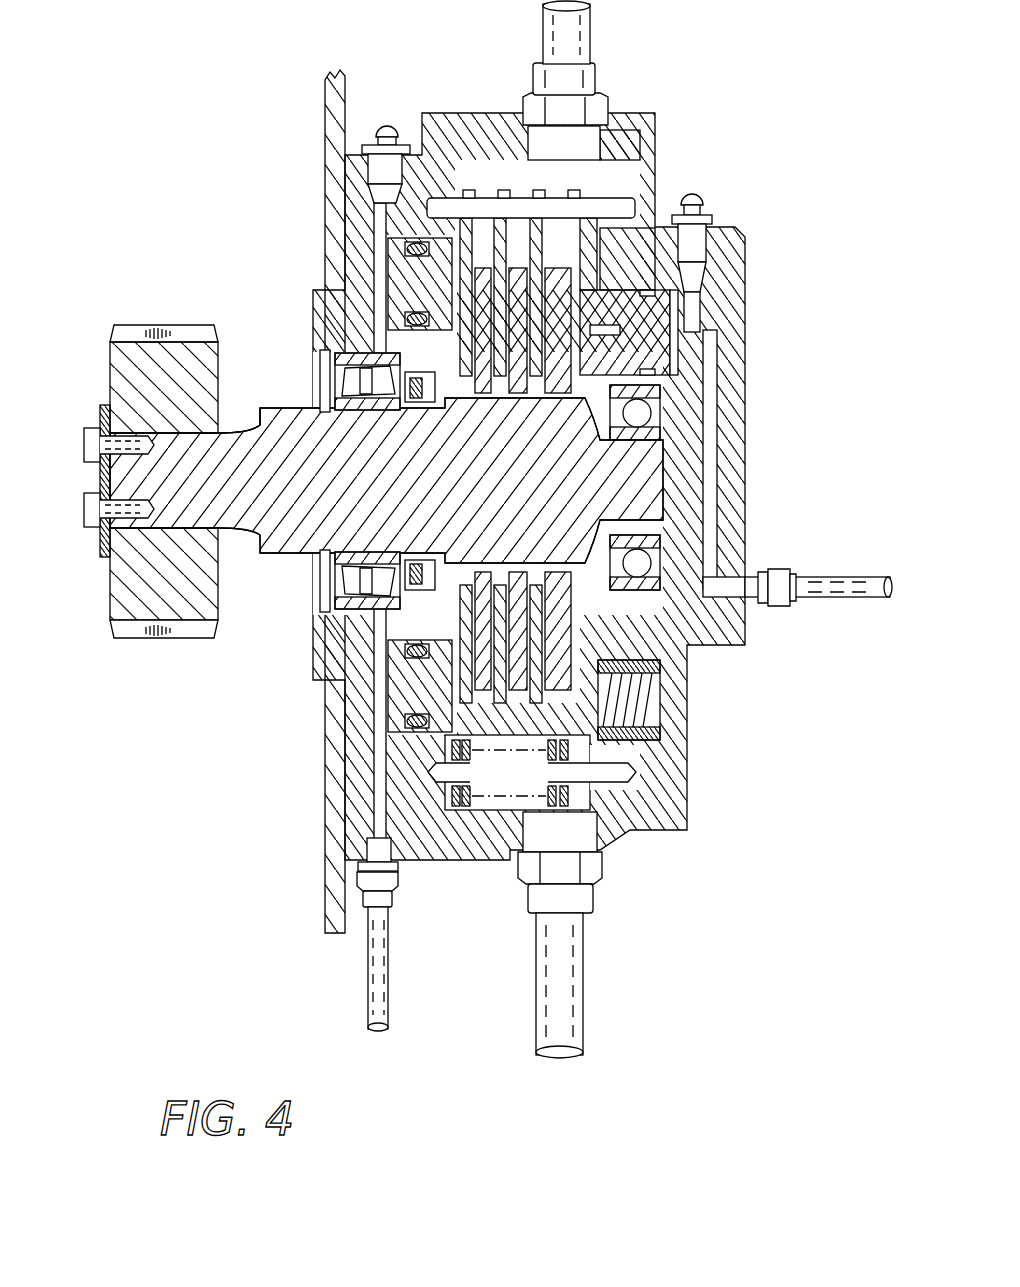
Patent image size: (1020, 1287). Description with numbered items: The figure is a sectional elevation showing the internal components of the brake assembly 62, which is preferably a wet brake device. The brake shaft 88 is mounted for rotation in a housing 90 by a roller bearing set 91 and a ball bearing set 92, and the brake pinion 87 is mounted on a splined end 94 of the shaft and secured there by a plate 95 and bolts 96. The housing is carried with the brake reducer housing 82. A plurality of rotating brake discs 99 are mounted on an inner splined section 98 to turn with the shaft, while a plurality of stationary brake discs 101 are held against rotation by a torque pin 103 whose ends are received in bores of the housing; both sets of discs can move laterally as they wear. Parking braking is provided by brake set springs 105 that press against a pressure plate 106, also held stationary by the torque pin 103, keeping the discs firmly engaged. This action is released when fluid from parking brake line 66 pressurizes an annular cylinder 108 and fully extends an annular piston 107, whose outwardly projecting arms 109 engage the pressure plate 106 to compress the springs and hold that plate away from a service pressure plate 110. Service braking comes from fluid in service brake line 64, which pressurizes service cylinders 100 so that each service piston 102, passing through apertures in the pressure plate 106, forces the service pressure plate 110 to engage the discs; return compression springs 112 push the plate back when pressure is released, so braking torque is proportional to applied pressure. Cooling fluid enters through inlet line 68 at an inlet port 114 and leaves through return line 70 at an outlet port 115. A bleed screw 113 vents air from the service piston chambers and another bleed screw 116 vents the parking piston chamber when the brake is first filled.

The brake assembly 62 is at (790, 97).
The service brake line 64 is at (826, 578).
The parking brake line 66 is at (390, 1008).
The inlet line 68 is at (585, 1008).
The return line 70 is at (590, 42).
The brake reducer housing 82 is at (325, 150).
The brake pinion 87 is at (110, 340).
The brake shaft 88 is at (278, 553).
The housing 90 is at (322, 282).
The roller bearing set 91 is at (342, 372).
The ball bearing set 92 is at (665, 415).
The splined end 94 is at (228, 410).
The plate 95 is at (100, 408).
The bolts 96 is at (85, 438).
The inner splined section 98 is at (538, 405).
The rotating brake discs 99 is at (550, 230).
The service cylinders 100 is at (712, 348).
The stationary brake discs 101 is at (470, 190).
The service piston 102 is at (680, 300).
The torque pin 103 is at (650, 190).
The brake set springs 105 is at (665, 735).
The pressure plate 106 is at (632, 168).
The annular piston 107 is at (400, 725).
The annular cylinder 108 is at (374, 690).
The outwardly projecting arms 109 is at (455, 740).
The service pressure plate 110 is at (640, 762).
The return compression springs 112 is at (530, 790).
The bleed screw 113 is at (706, 212).
The inlet port 114 is at (605, 840).
The outlet port 115 is at (606, 130).
The bleed screw 116 is at (388, 128).